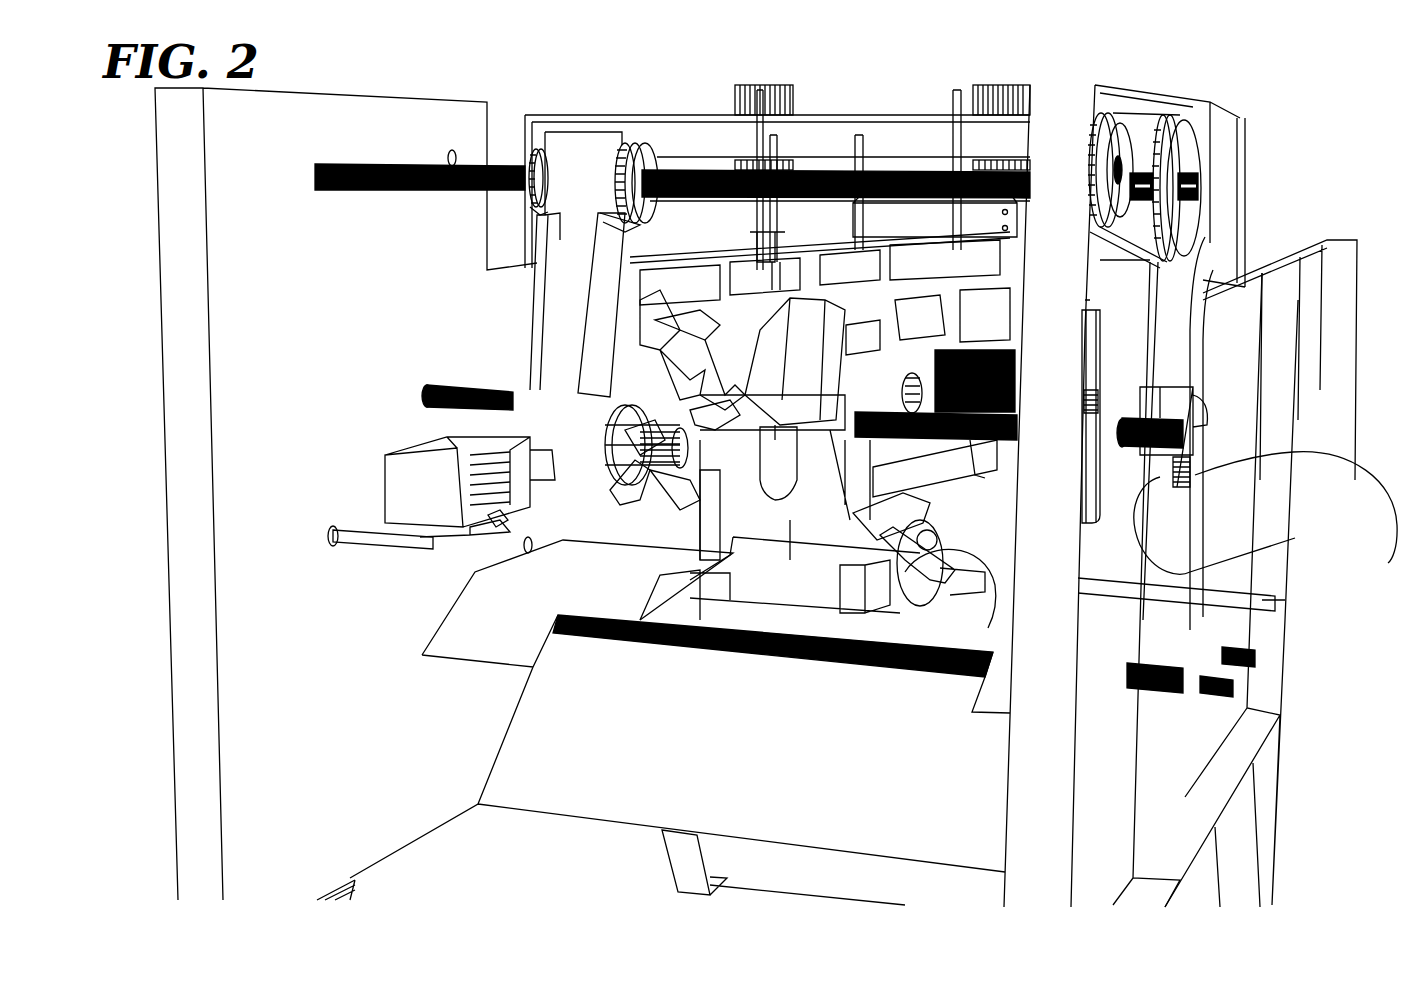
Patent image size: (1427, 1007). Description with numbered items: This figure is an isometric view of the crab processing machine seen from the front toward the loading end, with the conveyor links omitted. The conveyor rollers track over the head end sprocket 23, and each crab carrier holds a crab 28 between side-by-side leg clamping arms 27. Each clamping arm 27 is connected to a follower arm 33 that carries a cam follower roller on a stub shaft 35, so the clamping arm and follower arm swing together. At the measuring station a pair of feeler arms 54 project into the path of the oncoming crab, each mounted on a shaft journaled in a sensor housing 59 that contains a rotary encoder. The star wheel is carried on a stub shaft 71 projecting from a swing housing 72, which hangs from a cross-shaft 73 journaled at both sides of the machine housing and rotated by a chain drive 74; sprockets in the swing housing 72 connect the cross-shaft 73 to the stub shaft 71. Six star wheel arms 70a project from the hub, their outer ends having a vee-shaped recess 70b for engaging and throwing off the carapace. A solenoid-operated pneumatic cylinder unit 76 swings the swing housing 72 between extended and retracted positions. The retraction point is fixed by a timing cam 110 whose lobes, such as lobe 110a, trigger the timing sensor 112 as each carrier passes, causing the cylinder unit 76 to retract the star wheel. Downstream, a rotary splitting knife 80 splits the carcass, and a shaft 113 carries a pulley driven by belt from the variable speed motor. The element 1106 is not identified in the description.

The head end sprocket 23 is at (774, 462).
The leg clamping arm 27 is at (803, 368).
The crab 28 is at (625, 345).
The follower arm 33 is at (823, 543).
The stub shaft 35 is at (888, 465).
The feeler arm 54 is at (927, 215).
The sensor housing 59 is at (735, 90).
The star wheel arm 70a is at (640, 300).
The vee-shaped recess 70b is at (615, 490).
The stub shaft 71 is at (610, 432).
The swing housing 72 is at (515, 262).
The cross-shaft 73 is at (418, 165).
The chain drive 74 is at (500, 517).
The pneumatic cylinder unit 76 is at (413, 450).
The rotary splitting knife 80 is at (988, 622).
The timing cam 110 is at (1293, 540).
The timing cam lobe 110a is at (1265, 573).
The timing sensor 112 is at (1207, 440).
The shaft 113 is at (1190, 300).
The mounting block 1106 is at (1203, 410).